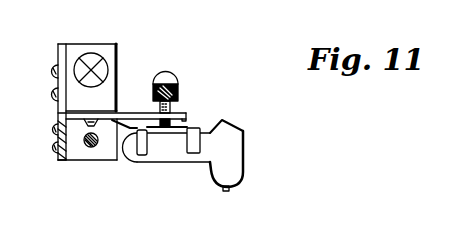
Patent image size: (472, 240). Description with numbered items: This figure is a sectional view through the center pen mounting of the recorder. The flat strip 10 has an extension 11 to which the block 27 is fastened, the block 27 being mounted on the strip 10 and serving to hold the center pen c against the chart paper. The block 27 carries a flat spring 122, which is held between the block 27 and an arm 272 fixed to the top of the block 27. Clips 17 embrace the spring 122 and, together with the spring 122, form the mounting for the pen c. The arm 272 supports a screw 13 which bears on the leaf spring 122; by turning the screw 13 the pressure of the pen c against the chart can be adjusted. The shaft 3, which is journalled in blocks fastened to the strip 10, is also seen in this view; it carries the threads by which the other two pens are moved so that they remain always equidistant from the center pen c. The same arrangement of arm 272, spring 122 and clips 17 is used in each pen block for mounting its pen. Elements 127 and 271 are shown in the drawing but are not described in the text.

The extension 11 is at (60, 110).
The indicator lamp 127 is at (112, 53).
The flat spring 122 is at (128, 114).
The block 27 is at (104, 131).
The shaft 3 is at (91, 148).
The flat strip 10 is at (63, 163).
The screw 13 is at (170, 80).
The arm 272 is at (186, 116).
The clips 17 is at (142, 145).
The trigger 271 is at (228, 133).
The pen c is at (229, 189).